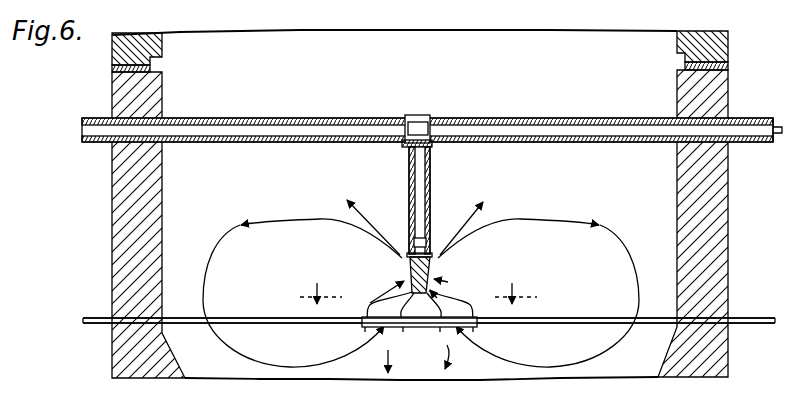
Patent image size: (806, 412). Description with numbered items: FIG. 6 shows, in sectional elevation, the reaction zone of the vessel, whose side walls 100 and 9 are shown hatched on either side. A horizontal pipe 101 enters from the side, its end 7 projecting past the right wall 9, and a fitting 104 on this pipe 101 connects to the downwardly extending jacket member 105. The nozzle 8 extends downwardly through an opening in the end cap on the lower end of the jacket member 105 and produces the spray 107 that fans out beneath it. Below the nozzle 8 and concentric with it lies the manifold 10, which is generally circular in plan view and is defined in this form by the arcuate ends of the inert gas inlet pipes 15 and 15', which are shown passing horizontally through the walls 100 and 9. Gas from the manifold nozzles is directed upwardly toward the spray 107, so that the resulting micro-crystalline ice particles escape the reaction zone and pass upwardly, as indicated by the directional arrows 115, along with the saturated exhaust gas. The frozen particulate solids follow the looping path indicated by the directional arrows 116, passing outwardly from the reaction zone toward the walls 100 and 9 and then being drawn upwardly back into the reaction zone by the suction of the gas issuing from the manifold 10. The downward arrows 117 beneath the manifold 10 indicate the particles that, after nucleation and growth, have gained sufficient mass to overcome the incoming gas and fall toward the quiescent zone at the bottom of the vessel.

The left wall 100 is at (151, 212).
The right wall 9 is at (731, 221).
The horizontal supply pipe 101 is at (562, 118).
The pipe end 7 is at (742, 128).
The tee fitting 104 is at (416, 165).
The jacket member 105 is at (430, 176).
The spray 107 is at (433, 273).
The directional arrows 115 is at (345, 206).
The directional arrows 116 is at (227, 226).
The nozzle 8 is at (447, 223).
The inert gas inlet pipe 15 is at (418, 304).
The inert gas inlet pipe 15' is at (760, 304).
The manifold 10 is at (424, 321).
The downward flow arrows 117 is at (440, 368).